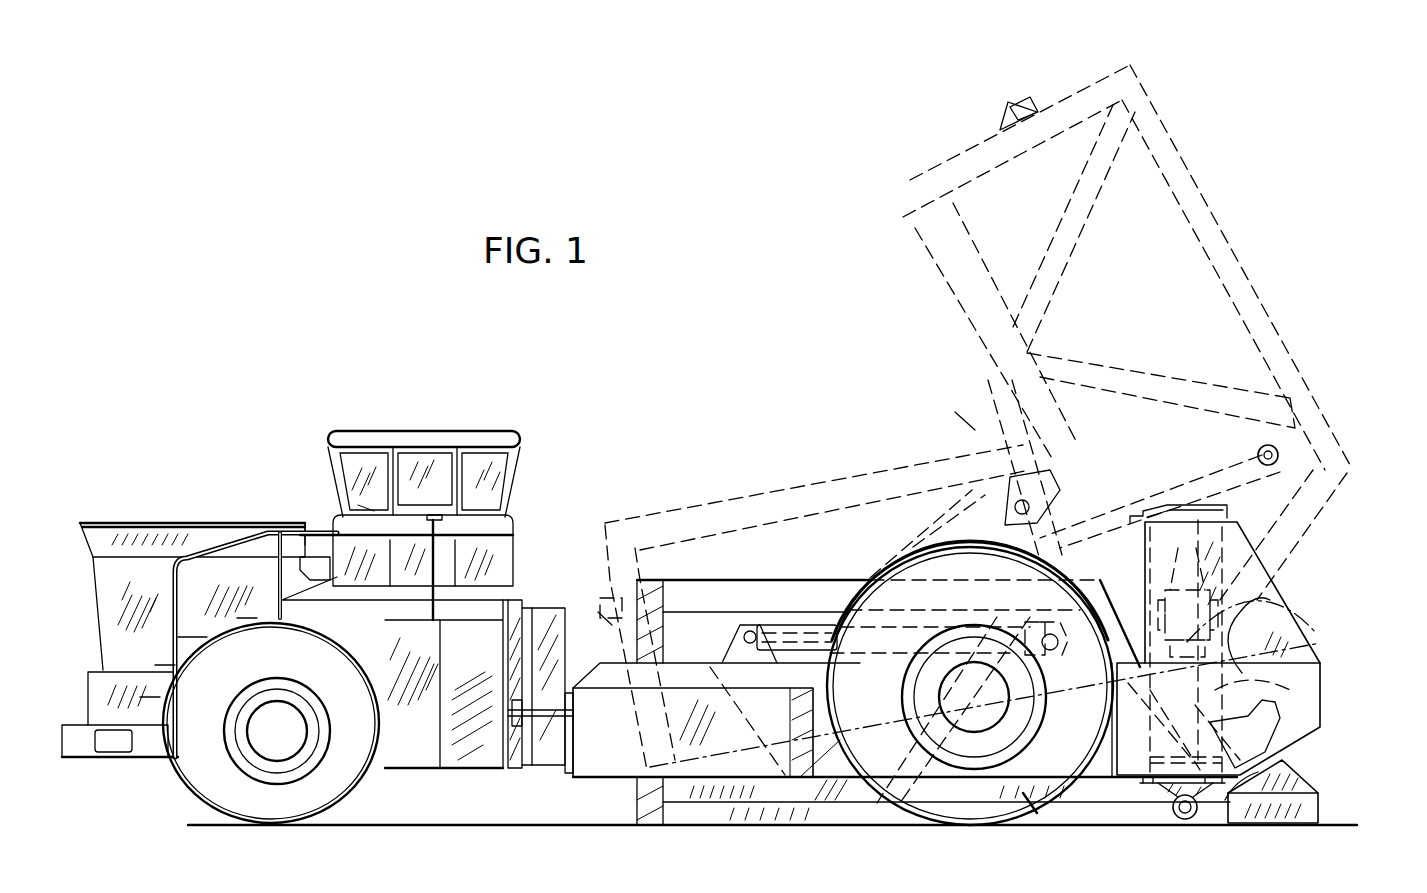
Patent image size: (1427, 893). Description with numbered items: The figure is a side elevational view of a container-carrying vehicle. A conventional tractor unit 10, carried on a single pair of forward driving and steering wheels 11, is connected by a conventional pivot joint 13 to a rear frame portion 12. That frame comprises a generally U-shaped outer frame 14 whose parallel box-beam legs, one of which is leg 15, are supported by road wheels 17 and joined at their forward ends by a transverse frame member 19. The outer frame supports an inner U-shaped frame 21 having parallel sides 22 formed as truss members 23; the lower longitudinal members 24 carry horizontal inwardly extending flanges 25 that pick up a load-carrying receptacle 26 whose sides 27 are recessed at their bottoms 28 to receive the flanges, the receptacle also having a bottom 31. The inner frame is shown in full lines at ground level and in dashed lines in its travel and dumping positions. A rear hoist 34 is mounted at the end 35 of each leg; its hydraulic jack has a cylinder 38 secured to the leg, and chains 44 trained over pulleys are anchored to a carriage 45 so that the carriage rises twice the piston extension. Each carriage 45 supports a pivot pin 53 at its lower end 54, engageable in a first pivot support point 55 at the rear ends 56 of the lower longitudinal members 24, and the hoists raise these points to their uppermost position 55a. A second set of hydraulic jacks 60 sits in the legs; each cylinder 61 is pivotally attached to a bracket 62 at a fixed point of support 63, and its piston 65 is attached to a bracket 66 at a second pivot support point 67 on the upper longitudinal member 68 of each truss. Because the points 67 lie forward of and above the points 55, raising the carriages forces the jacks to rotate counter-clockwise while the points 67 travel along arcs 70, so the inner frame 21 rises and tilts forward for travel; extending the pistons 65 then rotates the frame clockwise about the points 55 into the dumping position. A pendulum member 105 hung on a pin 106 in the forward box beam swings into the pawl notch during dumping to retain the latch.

The tractor unit 10 is at (473, 437).
The forward driving and steering wheels 11 is at (355, 788).
The rear frame portion 12 is at (580, 778).
The pivot joint 13 is at (538, 765).
The outer U-shaped frame 14 is at (598, 775).
The leg 15 is at (590, 736).
The road wheels 17 is at (1036, 815).
The transverse frame member 19 is at (590, 778).
The inner U-shaped frame 21 is at (1195, 158).
The sides 22 is at (1142, 286).
The truss members 23 is at (1248, 240).
The lower longitudinal members 24 is at (938, 290).
The flanges 25 is at (1075, 822).
The receptacle 26 is at (1310, 761).
The sides 27 is at (1320, 640).
The bottoms 28 is at (1317, 803).
The bottom 31 is at (912, 245).
The rear hoist 34 is at (1216, 583).
The end 35 is at (1320, 688).
The cylinder 38 is at (1235, 690).
The chains 44 is at (1183, 558).
The carriage 45 is at (1232, 800).
The pivot pin 53 is at (1160, 795).
The lower end 54 is at (1165, 805).
The first pivot support point 55 is at (1200, 812).
The uppermost position 55a is at (1270, 600).
The rear ends 56 is at (1178, 822).
The hydraulic jacks 60 is at (818, 625).
The cylinder 61 is at (847, 600).
The bracket 62 is at (727, 623).
The fixed point of support 63 is at (752, 628).
The piston 65 is at (1045, 675).
The bracket 66 is at (1068, 610).
The second pivot support point 67 is at (1058, 643).
The upper longitudinal member 68 is at (903, 462).
The arcs 70 is at (960, 425).
The pendulum member 105 is at (1000, 122).
The pin 106 is at (1025, 95).